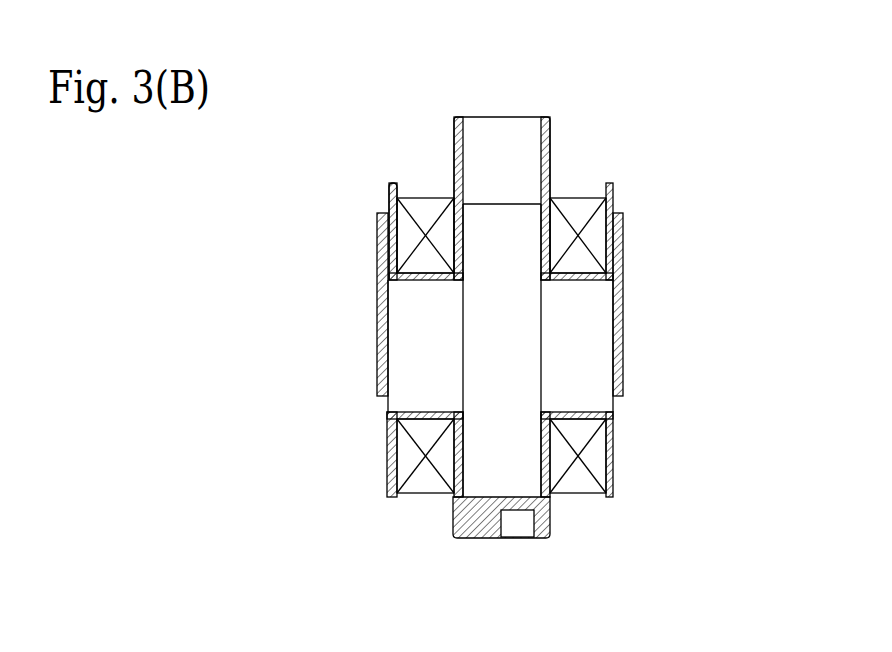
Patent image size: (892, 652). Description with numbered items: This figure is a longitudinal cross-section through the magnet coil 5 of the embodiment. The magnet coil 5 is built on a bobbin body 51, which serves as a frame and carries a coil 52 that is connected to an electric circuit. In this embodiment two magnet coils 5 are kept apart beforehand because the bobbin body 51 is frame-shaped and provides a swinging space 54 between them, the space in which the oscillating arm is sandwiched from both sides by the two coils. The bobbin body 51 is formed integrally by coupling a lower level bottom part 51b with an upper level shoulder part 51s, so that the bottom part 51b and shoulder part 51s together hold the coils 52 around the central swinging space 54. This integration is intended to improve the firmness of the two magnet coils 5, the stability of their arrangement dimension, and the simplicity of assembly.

The magnet coil 5 is at (425, 492).
The bobbin body 51 is at (380, 371).
The upper level shoulder part 51s is at (485, 143).
The lower level bottom part 51b is at (497, 497).
The coil 52 is at (425, 210).
The swinging space 54 is at (515, 338).